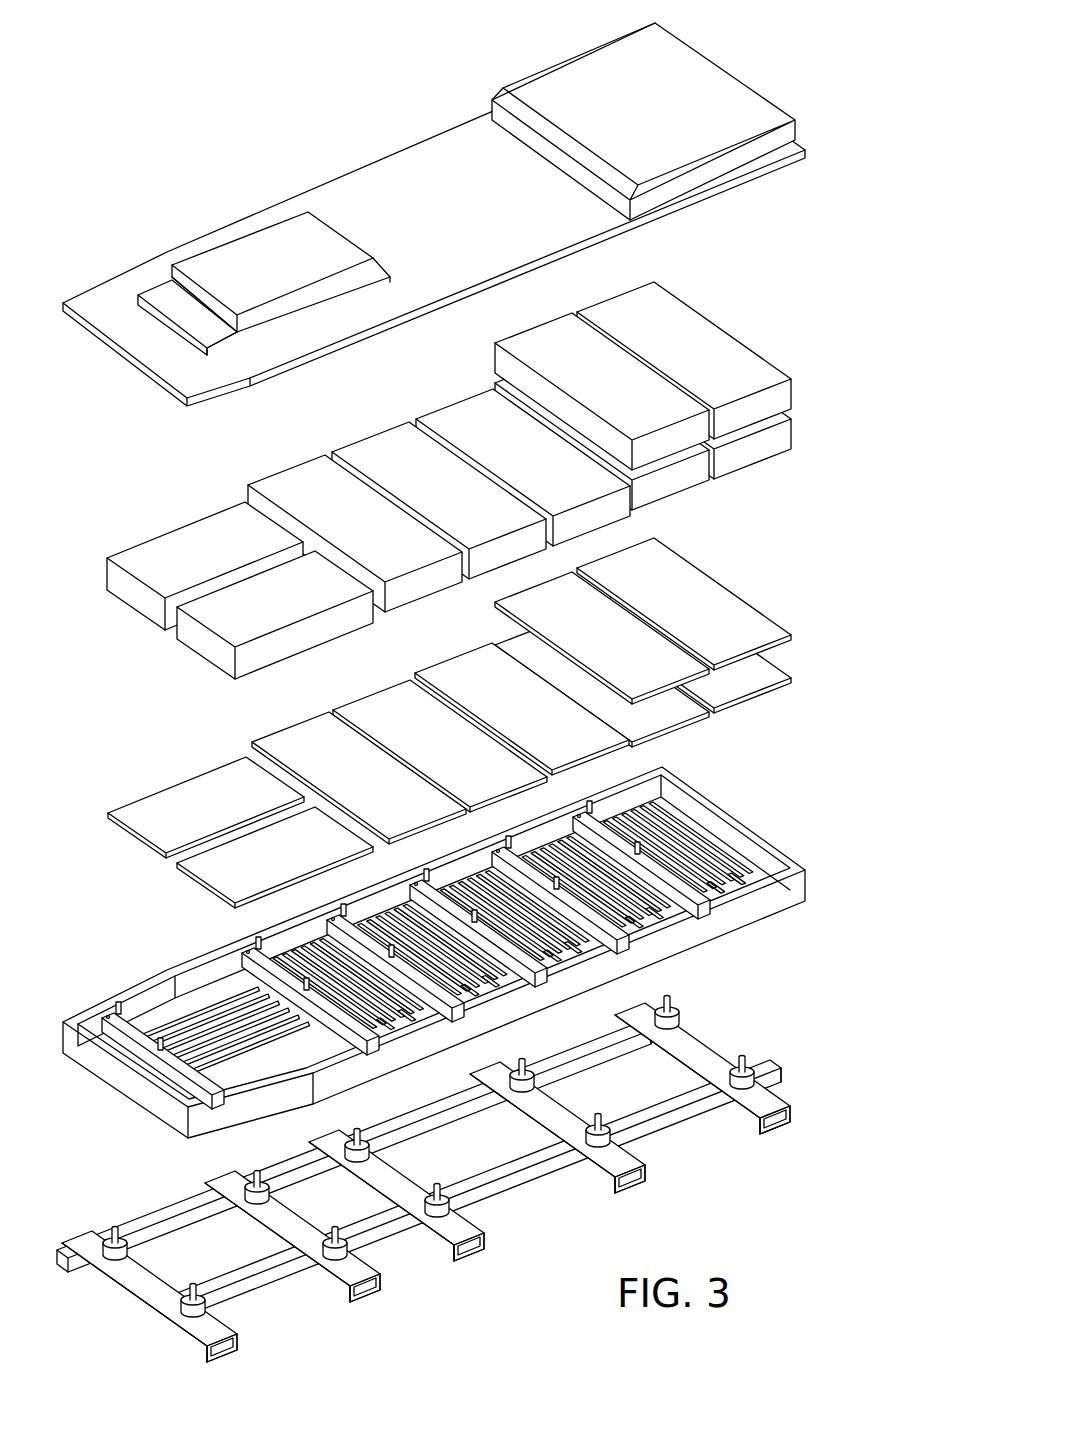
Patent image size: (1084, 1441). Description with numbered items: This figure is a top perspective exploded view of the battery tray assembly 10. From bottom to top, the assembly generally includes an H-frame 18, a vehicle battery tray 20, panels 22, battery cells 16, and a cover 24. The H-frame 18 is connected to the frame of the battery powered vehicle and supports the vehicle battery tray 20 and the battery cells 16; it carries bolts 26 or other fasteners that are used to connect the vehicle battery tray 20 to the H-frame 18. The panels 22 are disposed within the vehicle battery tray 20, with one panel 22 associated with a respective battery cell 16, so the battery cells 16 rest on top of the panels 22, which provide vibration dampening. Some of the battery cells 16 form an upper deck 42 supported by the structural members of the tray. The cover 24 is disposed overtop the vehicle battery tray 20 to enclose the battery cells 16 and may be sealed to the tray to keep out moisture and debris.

The battery tray assembly 10 is at (872, 38).
The battery cells 16 is at (481, 470).
The H-frame 18 is at (435, 1164).
The vehicle battery tray 20 is at (757, 818).
The panels 22 is at (303, 747).
The cover 24 is at (434, 206).
The bolts 26 is at (600, 1125).
The upper deck 42 is at (659, 384).